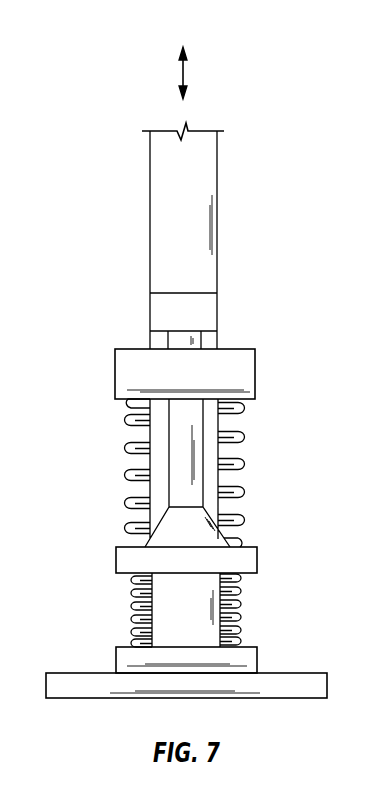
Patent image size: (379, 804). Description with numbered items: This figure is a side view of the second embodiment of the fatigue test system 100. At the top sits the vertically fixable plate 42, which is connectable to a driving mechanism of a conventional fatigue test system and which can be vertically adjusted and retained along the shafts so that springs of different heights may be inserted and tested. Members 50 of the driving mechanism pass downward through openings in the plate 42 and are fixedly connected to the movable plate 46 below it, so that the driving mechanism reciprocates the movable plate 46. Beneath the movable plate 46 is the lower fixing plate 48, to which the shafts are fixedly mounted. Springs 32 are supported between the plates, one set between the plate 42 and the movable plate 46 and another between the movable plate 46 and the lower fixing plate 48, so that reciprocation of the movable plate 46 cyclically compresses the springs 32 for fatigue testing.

The fatigue test system 100 is at (259, 161).
The vertically fixable plate 42 is at (258, 364).
The members 50 is at (178, 462).
The springs 32 is at (232, 441).
The movable plate 46 is at (127, 565).
The lower fixing plate 48 is at (97, 693).